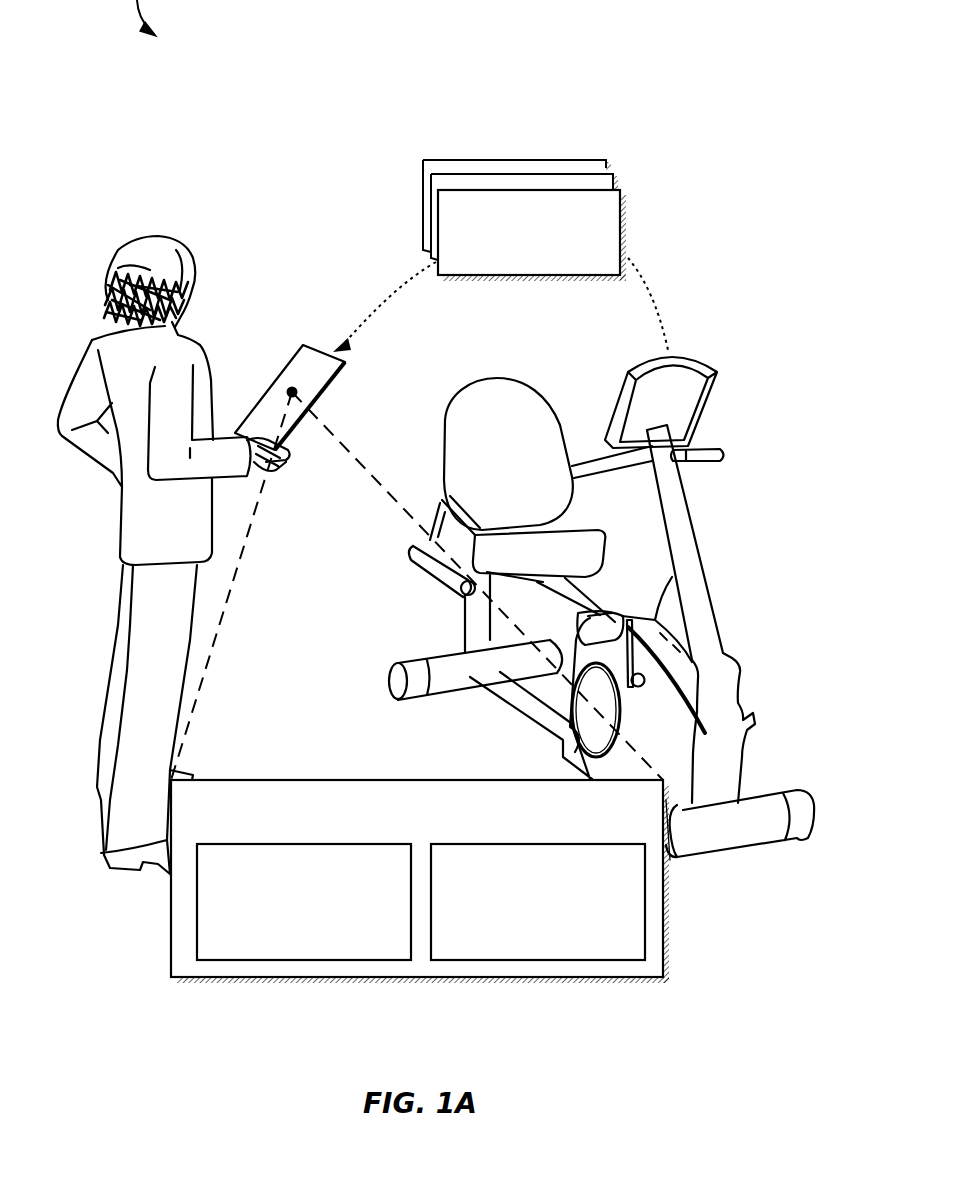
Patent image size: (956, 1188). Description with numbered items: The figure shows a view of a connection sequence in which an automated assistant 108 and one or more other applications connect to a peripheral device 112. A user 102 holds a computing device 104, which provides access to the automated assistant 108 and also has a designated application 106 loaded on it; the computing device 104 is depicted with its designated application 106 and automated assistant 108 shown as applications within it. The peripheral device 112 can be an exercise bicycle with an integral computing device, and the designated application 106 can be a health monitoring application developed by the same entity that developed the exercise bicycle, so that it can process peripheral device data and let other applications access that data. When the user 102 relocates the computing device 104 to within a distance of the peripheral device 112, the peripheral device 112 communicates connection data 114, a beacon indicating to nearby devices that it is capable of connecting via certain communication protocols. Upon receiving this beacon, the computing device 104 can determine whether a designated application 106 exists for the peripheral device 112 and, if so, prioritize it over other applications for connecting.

The user 102 is at (125, 250).
The computing device 104 is at (290, 357).
The designated application 106 is at (289, 936).
The automated assistant 108 is at (523, 936).
The peripheral device 112 is at (650, 406).
The connection data 114 is at (515, 265).